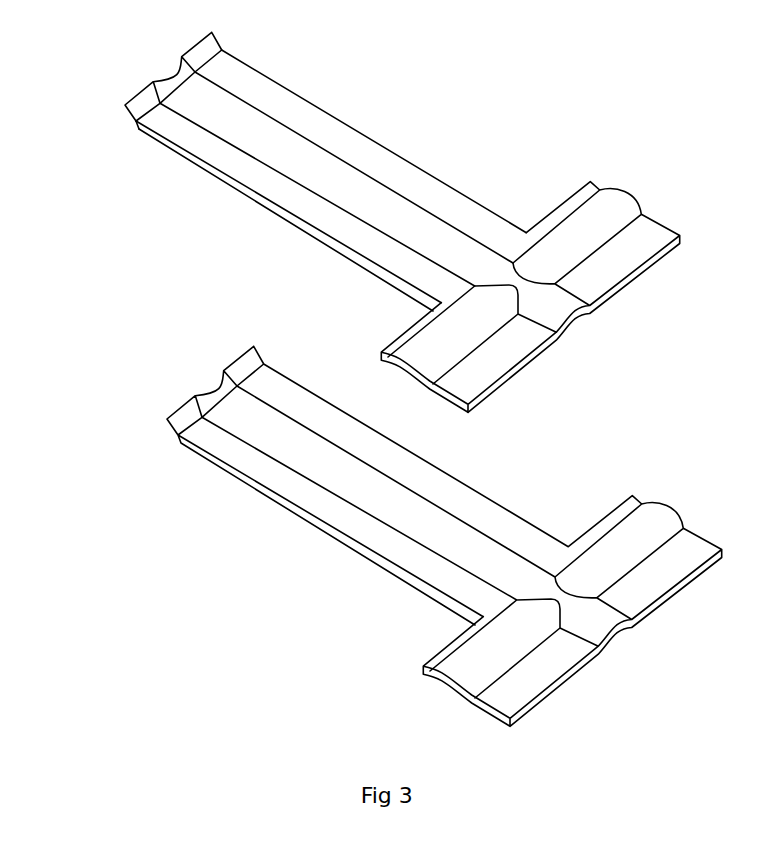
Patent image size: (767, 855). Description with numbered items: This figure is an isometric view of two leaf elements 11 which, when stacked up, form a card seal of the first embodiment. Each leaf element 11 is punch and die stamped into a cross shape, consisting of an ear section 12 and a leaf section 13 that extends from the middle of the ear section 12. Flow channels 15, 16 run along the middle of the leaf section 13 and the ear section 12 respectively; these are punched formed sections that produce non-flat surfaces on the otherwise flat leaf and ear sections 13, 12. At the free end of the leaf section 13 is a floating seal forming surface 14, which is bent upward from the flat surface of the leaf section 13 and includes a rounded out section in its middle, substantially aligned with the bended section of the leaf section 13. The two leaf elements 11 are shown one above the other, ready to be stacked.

The leaf element 11 is at (397, 372).
The ear section 12 is at (642, 240).
The leaf section 13 is at (282, 102).
The floating seal forming surface 14 is at (139, 98).
The flow channel 15 is at (300, 165).
The flow channel 16 is at (473, 328).